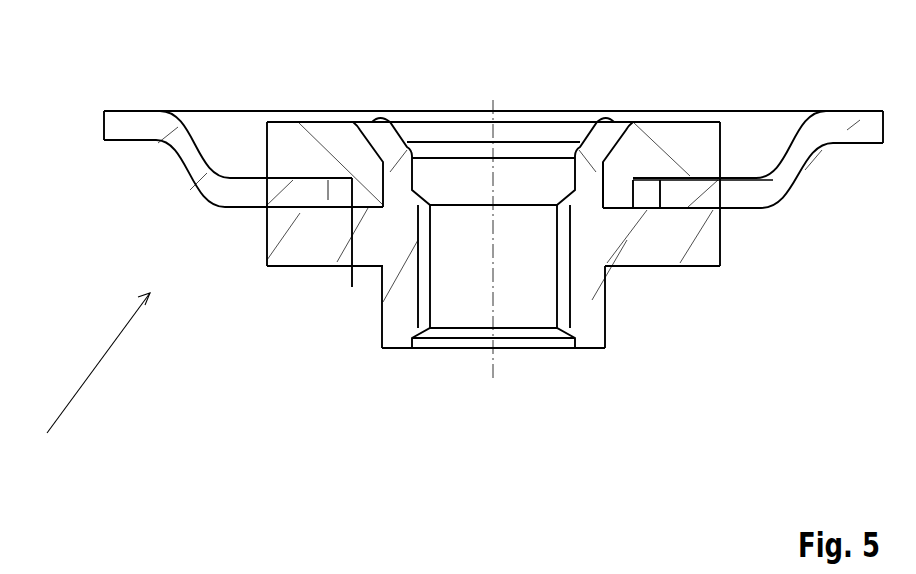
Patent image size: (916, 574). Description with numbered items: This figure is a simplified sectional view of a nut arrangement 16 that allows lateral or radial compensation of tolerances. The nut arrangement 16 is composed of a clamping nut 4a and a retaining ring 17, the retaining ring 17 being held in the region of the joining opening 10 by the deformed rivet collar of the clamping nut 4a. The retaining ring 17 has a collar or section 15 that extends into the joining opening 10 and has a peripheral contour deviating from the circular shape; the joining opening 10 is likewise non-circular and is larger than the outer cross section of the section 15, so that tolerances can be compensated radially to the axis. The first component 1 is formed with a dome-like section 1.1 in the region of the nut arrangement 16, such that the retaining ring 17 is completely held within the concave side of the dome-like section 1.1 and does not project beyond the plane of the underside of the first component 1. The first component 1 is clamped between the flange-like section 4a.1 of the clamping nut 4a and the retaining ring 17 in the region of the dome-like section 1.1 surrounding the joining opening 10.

The first component 1 is at (117, 127).
The dome-like section 1.1 is at (233, 207).
The joining opening 10 is at (340, 187).
The section 15 is at (615, 190).
The nut arrangement 16 is at (90, 383).
The retaining ring 17 is at (685, 136).
The clamping nut 4a is at (597, 338).
The flange-like section 4a.1 is at (708, 238).